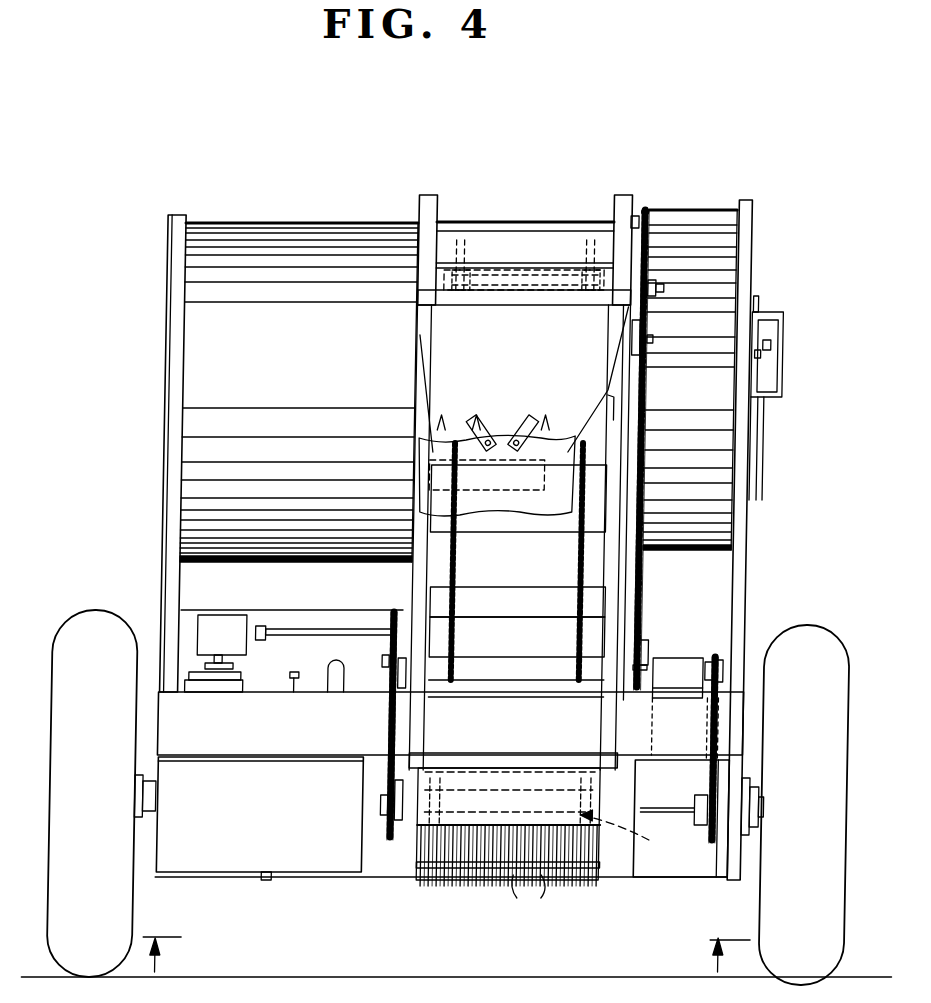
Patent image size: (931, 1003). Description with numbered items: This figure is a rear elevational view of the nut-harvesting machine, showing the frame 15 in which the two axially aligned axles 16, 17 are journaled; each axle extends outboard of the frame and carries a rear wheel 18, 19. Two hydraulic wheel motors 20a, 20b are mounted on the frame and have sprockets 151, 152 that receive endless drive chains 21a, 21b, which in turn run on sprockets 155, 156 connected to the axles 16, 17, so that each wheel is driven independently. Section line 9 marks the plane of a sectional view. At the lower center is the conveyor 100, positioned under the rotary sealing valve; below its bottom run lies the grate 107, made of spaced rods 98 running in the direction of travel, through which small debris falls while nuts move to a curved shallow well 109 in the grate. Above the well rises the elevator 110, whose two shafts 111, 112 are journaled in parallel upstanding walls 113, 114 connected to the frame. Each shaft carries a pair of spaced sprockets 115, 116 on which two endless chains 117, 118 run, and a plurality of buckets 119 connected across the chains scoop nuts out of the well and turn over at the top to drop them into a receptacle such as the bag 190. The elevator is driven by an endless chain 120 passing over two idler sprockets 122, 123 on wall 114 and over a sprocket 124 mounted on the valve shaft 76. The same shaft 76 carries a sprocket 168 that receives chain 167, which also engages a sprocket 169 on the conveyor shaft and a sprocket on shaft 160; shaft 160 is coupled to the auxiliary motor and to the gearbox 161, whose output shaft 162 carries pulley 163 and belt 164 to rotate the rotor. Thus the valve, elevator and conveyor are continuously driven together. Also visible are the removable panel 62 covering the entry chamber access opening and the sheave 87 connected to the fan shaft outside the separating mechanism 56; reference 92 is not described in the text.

The section line 9 is at (447, 940).
The frame 15 is at (162, 731).
The axle 16 is at (140, 795).
The axle 17 is at (764, 810).
The rear wheel 18 is at (108, 876).
The rear wheel 19 is at (818, 879).
The hydraulic motor 20a is at (351, 685).
The hydraulic motor 20b is at (686, 684).
The drive chain 21a is at (392, 775).
The drive chain 21b is at (714, 772).
The separating mechanism 56 is at (180, 337).
The removable panel 62 is at (163, 395).
The shaft 76 is at (640, 650).
The sheave 87 is at (776, 372).
The bracket fasteners 92 is at (758, 352).
The spaced rods 98 is at (566, 892).
The conveyor 100 is at (636, 841).
The grate 107 is at (488, 890).
The shallow well 109 is at (606, 885).
The elevator 110 is at (535, 218).
The shaft 111 is at (660, 290).
The shaft 112 is at (525, 800).
The upstanding wall 113 is at (432, 366).
The upstanding wall 114 is at (606, 364).
The sprocket 115 is at (458, 240).
The sprocket 116 is at (582, 242).
The endless chain 117 is at (458, 568).
The endless chain 118 is at (578, 570).
The bucket 119 is at (590, 498).
The endless chain 120 is at (644, 400).
The idler sprocket 122 is at (644, 340).
The idler sprocket 123 is at (643, 211).
The sprocket 124 is at (646, 662).
The sprocket 151 is at (380, 675).
The sprocket 152 is at (726, 672).
The sprocket 155 is at (400, 798).
The sprocket 156 is at (712, 805).
The shaft 160 is at (345, 630).
The gearbox 161 is at (225, 630).
The output shaft 162 is at (236, 668).
The pulley 163 is at (242, 690).
The endless belt 164 is at (197, 685).
The chain 167 is at (403, 685).
The sprocket 168 is at (402, 612).
The sprocket 169 is at (390, 812).
The bag 190 is at (460, 445).